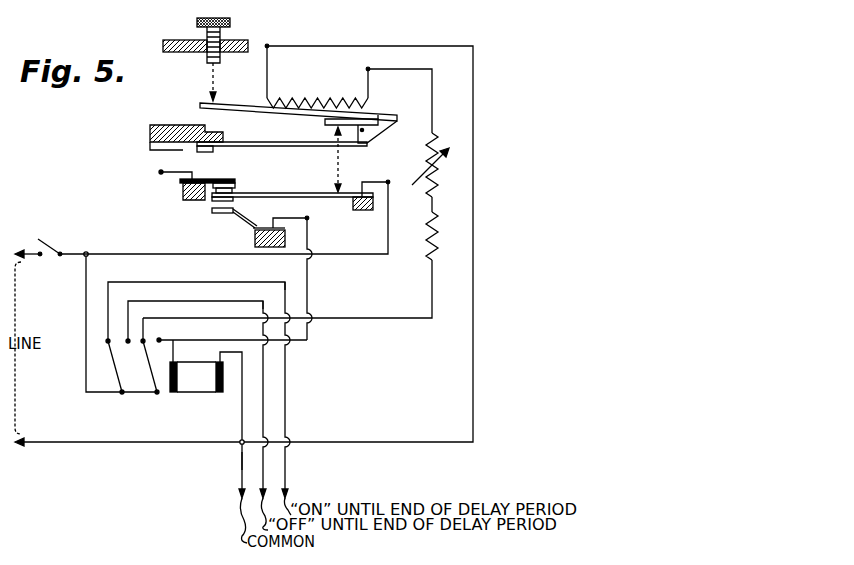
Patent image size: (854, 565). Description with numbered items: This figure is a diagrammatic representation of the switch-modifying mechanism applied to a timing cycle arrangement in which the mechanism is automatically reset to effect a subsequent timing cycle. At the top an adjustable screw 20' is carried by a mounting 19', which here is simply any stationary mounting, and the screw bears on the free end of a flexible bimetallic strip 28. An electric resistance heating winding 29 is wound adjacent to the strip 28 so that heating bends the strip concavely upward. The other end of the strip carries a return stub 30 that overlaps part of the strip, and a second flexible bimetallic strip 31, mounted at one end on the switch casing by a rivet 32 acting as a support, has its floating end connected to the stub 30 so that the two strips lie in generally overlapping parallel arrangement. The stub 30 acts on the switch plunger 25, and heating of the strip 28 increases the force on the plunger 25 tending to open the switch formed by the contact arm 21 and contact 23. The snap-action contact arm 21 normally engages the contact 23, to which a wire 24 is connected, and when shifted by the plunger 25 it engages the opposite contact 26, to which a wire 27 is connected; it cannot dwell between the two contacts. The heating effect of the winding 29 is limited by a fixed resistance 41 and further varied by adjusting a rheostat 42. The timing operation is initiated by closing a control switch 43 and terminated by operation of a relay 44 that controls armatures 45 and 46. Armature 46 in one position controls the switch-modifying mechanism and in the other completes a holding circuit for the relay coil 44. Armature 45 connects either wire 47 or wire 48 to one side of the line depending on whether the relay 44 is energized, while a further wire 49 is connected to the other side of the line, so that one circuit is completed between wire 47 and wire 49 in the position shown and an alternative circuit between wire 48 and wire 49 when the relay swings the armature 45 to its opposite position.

The mounting 19' is at (205, 67).
The adjustable screw 20' is at (194, 59).
The contact arm 21 is at (280, 180).
The contact 23 is at (213, 192).
The wire 24 is at (160, 174).
The plunger 25 is at (338, 160).
The opposite contact 26 is at (204, 212).
The wire 27 is at (290, 216).
The flexible bimetallic strip 28 is at (233, 109).
The electric resistance heating winding 29 is at (331, 100).
The return stub 30 is at (376, 131).
The second flexible bimetallic strip 31 is at (300, 132).
The rivet 32 is at (213, 152).
The fixed resistance 41 is at (436, 247).
The rheostat 42 is at (438, 179).
The control switch 43 is at (50, 247).
The relay 44 is at (197, 393).
The armature 45 is at (117, 373).
The armature 46 is at (150, 380).
The wire 47 is at (286, 374).
The wire 48 is at (264, 398).
The wire 49 is at (242, 466).